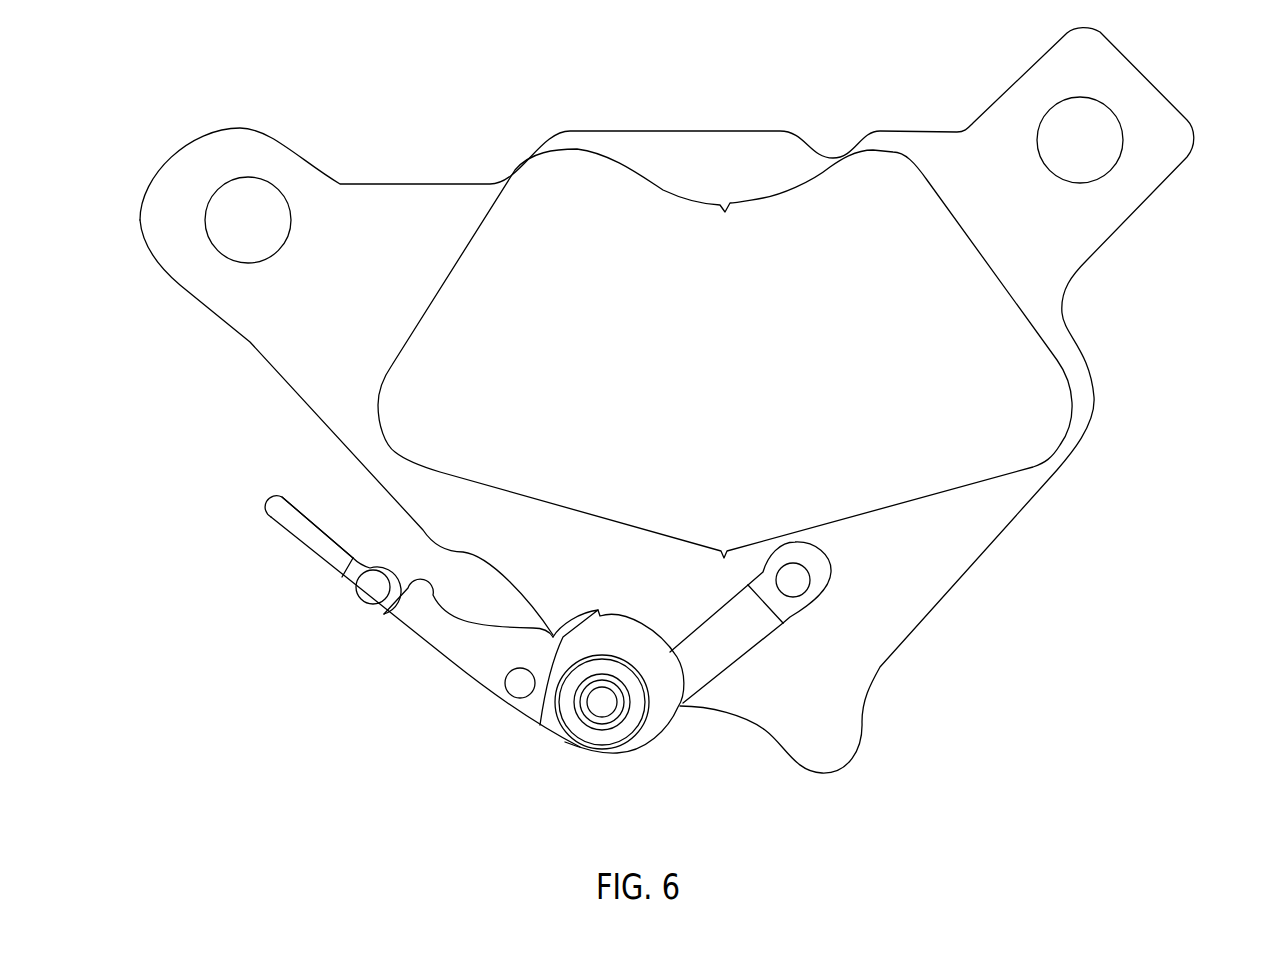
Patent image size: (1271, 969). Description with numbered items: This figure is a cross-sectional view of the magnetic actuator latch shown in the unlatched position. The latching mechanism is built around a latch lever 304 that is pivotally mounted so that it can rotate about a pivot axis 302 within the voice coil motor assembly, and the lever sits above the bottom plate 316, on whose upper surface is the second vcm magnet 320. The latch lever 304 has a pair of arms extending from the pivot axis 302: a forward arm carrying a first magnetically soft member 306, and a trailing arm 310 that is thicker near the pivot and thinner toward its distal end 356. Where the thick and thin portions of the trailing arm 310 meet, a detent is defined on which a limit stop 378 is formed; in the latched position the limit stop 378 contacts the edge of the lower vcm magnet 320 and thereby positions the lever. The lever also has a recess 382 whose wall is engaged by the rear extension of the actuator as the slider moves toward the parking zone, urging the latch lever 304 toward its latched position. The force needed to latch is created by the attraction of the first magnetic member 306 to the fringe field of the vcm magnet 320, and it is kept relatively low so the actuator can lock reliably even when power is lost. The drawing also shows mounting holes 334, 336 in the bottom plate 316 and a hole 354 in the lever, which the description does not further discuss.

The pivot axis 302 is at (598, 707).
The latch lever 304 is at (730, 643).
The first magnetically soft member 306 is at (797, 580).
The trailing arm 310 is at (278, 512).
The bottom plate 316 is at (360, 308).
The second vcm magnet 320 is at (741, 372).
The mounting hole 334 is at (1087, 123).
The mounting hole 336 is at (245, 205).
The hole 354 is at (518, 687).
The distal end 356 is at (316, 543).
The limit stop 378 is at (421, 596).
The recess 382 is at (540, 725).